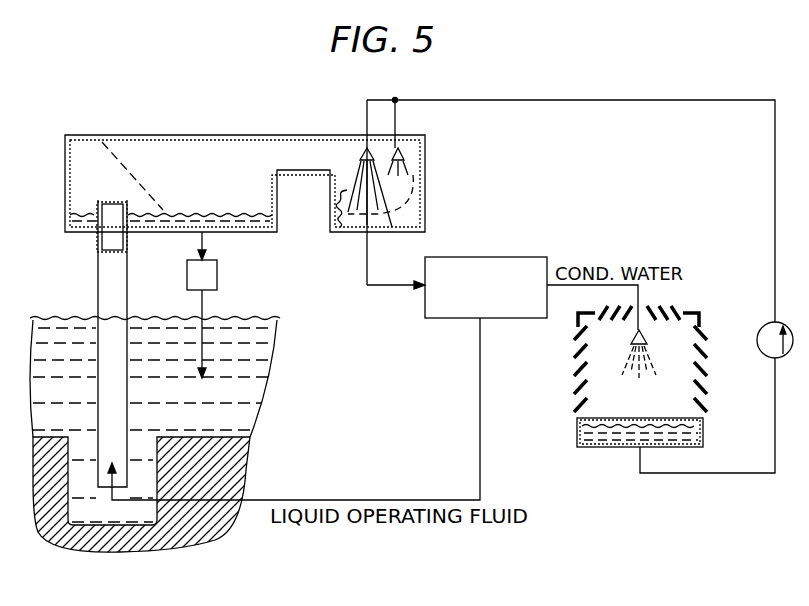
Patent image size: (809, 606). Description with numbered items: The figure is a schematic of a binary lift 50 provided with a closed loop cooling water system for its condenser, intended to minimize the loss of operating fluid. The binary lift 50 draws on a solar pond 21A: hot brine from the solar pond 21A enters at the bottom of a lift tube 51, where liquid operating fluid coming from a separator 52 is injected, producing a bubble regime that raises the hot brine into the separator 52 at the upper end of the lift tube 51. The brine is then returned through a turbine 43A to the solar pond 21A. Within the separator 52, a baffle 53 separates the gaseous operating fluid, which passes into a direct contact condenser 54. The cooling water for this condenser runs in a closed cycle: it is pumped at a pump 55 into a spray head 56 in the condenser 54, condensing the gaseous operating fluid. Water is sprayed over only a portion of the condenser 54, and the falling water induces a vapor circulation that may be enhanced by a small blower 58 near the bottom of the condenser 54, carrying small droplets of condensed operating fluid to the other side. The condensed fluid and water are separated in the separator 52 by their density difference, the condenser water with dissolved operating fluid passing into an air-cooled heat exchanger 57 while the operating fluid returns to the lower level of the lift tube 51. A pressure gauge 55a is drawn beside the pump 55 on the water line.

The binary lift 50 is at (64, 268).
The lift tube 51 is at (98, 385).
The separator 52 is at (223, 135).
The baffle 53 is at (113, 150).
The direct contact condenser 54 is at (427, 173).
The pump 55 is at (498, 257).
The pump 55a is at (758, 342).
The spray head 56 is at (400, 150).
The air-cooled heat exchanger 57 is at (713, 300).
The blower 58 is at (347, 190).
The turbine 43A is at (217, 277).
The solar pond 21A is at (233, 410).